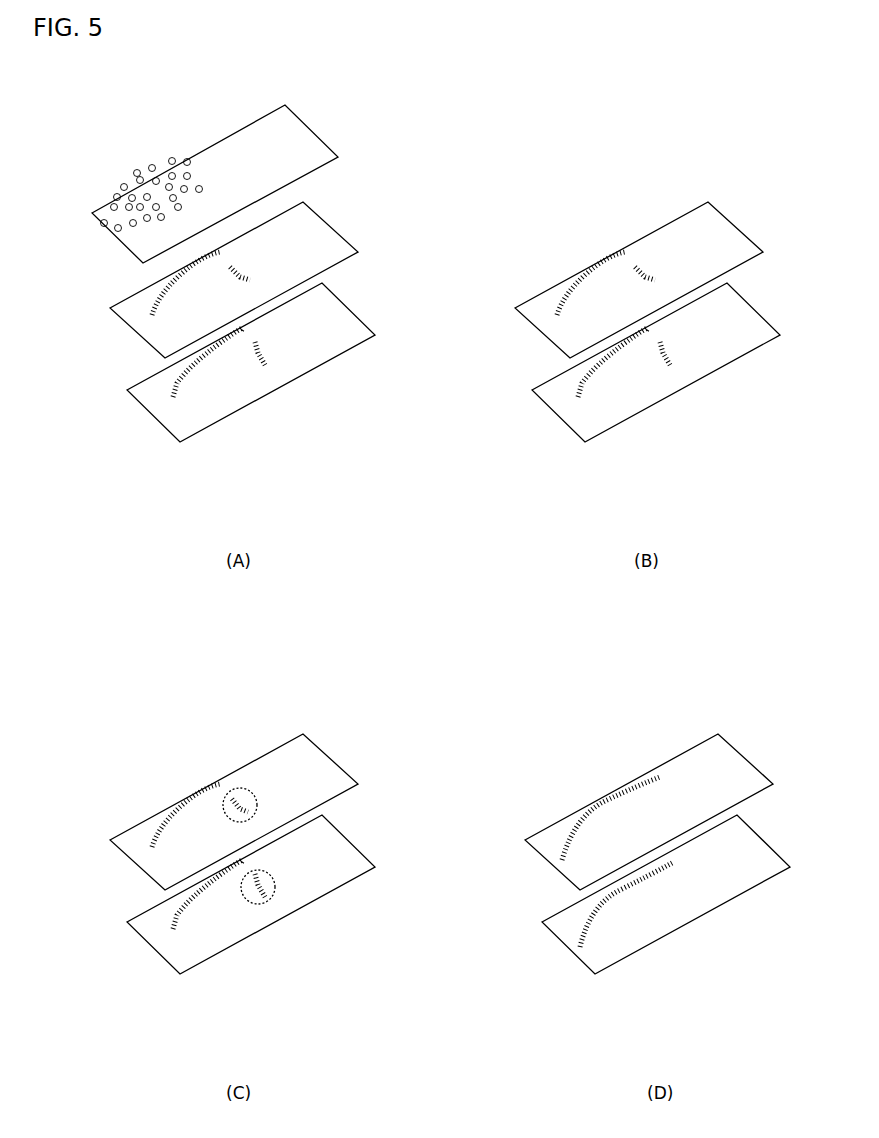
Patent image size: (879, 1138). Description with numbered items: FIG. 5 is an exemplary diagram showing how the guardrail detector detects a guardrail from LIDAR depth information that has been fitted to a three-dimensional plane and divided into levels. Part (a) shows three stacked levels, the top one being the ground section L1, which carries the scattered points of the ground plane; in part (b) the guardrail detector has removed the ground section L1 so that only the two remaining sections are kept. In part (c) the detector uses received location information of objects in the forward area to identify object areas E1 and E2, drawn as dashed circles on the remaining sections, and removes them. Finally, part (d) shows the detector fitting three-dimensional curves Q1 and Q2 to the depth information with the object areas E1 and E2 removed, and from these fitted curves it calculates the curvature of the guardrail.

The ground section L1 is at (107, 228).
The object area E1 is at (243, 788).
The object area E2 is at (262, 904).
The 3D-curve Q1 is at (657, 772).
The 3D-curve Q2 is at (672, 863).